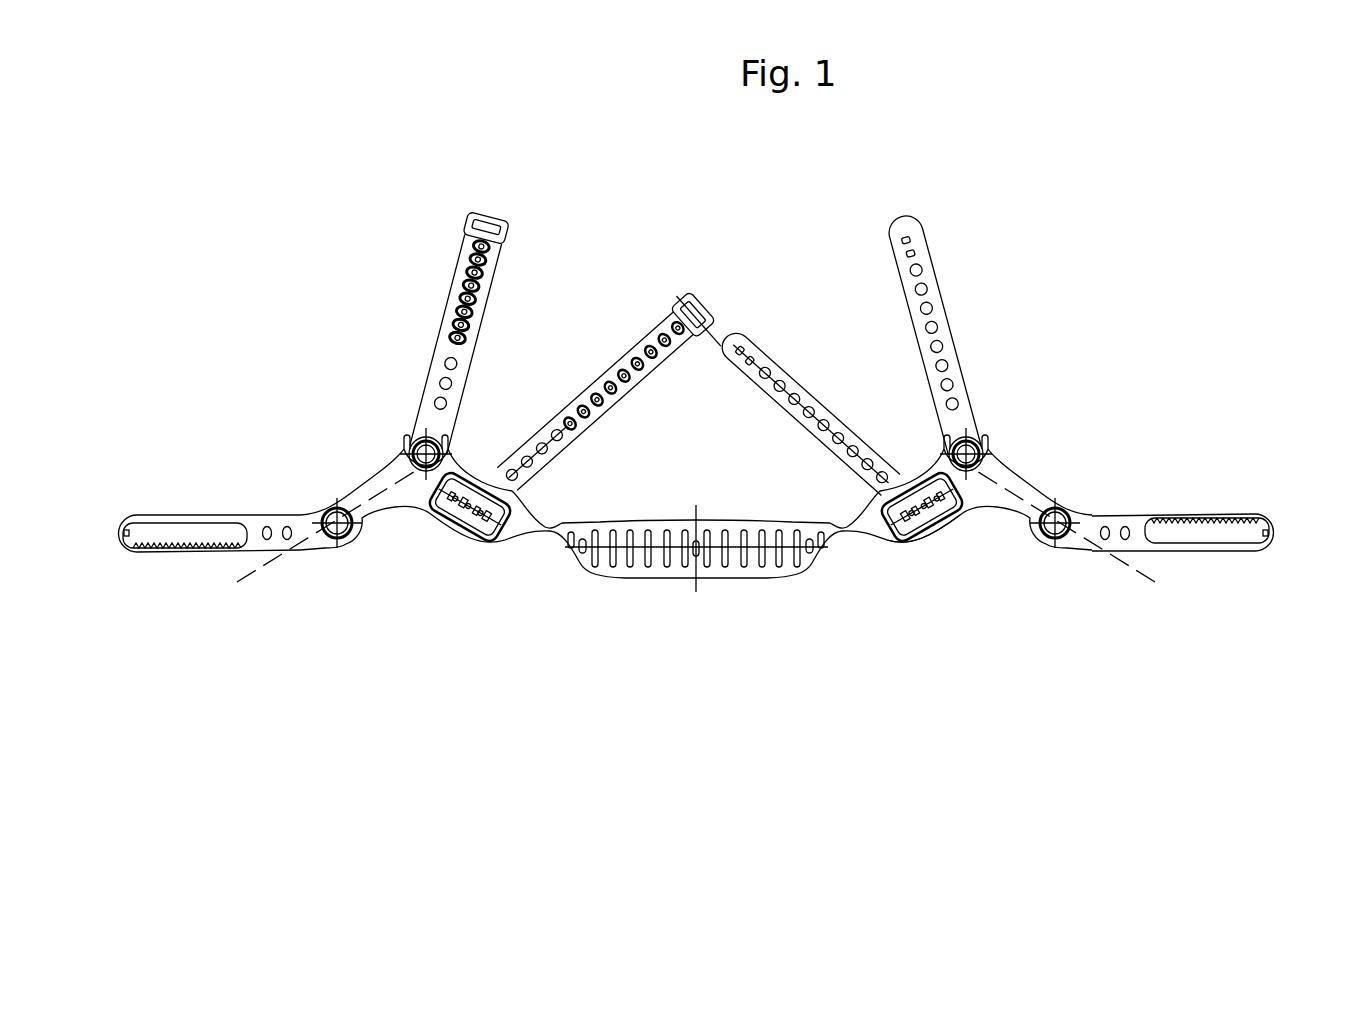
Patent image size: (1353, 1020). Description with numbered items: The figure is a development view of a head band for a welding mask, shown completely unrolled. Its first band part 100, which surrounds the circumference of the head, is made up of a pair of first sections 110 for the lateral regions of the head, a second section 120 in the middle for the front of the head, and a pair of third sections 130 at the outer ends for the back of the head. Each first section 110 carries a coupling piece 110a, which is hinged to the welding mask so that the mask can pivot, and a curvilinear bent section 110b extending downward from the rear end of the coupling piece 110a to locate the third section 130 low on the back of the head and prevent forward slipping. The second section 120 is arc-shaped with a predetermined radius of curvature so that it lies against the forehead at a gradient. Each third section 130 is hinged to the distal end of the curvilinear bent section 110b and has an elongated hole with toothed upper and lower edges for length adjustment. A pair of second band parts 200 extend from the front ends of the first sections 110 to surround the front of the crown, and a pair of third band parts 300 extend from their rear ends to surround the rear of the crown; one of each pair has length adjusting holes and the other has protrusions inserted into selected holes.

The first band part 100 is at (564, 574).
The first section 110 is at (450, 533).
The coupling piece 110a is at (908, 540).
The curvilinear bent section 110b is at (377, 484).
The second section 120 is at (657, 573).
The third section 130 is at (211, 520).
The second band part 200 is at (619, 351).
The third band part 300 is at (445, 305).